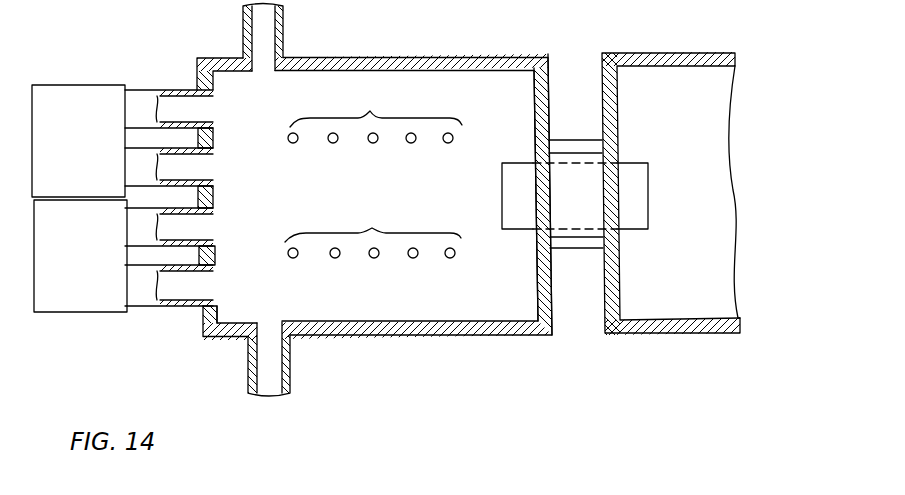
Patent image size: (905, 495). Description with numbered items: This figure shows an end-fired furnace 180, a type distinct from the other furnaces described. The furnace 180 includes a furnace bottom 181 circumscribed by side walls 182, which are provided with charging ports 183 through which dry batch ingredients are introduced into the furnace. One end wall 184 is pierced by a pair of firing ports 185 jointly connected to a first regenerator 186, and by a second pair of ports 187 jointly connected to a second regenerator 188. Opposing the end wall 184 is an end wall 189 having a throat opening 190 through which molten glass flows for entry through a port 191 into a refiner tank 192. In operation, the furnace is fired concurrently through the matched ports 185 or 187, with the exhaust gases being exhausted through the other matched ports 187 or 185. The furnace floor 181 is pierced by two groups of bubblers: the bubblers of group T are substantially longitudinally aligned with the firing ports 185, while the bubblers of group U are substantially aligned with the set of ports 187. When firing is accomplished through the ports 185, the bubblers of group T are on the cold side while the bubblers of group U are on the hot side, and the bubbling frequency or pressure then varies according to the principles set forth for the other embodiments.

The end-fired furnace 180 is at (361, 194).
The furnace bottom 181 is at (343, 199).
The side walls 182 is at (425, 57).
The charging ports 183 is at (283, 31).
The end wall 184 is at (205, 319).
The firing ports 185 is at (199, 164).
The first regenerator 186 is at (90, 147).
The second pair of ports 187 is at (205, 232).
The second regenerator 188 is at (88, 271).
The end wall 189 is at (540, 297).
The throat opening 190 is at (510, 192).
The port 191 is at (640, 204).
The refiner tank 192 is at (661, 76).